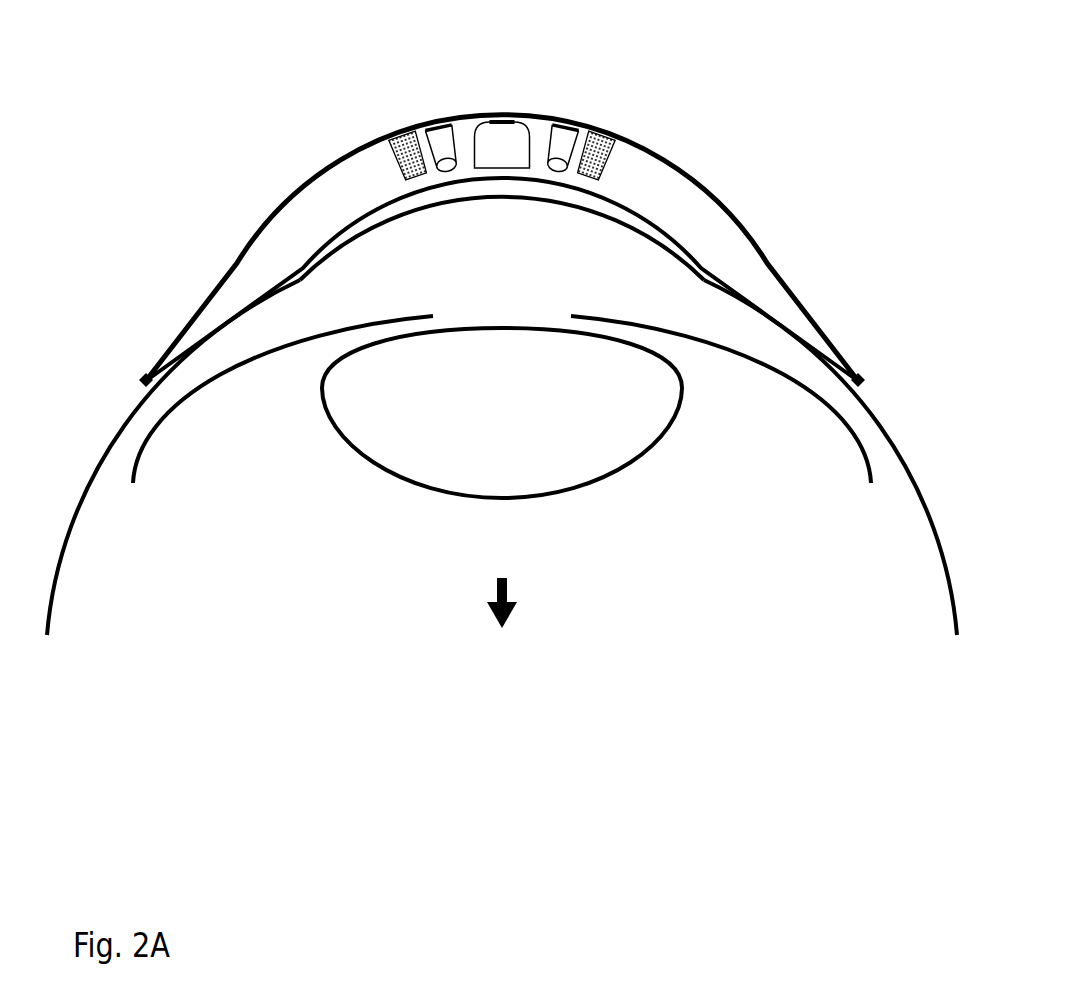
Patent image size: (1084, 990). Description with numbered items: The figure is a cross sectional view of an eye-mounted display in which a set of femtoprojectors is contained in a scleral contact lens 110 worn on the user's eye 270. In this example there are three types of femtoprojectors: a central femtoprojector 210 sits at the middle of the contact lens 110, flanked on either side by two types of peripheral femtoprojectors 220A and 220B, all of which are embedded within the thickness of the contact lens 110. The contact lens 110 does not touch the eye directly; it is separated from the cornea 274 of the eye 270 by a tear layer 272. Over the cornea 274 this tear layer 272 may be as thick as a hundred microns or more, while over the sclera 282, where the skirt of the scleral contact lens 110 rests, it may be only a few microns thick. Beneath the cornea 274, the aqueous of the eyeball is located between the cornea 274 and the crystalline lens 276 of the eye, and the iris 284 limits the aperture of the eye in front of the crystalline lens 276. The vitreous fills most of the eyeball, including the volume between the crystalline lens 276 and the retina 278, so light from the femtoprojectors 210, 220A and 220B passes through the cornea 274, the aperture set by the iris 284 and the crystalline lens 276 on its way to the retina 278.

The contact lens 110 is at (278, 240).
The central femtoprojector 210 is at (517, 145).
The peripheral femtoprojector 220A is at (555, 143).
The peripheral femtoprojector 220B is at (617, 140).
The eye 270 is at (764, 569).
The tear layer 272 is at (653, 230).
The cornea 274 is at (468, 269).
The crystalline lens 276 is at (488, 426).
The retina 278 is at (496, 586).
The sclera 282 is at (502, 457).
The iris 284 is at (502, 396).